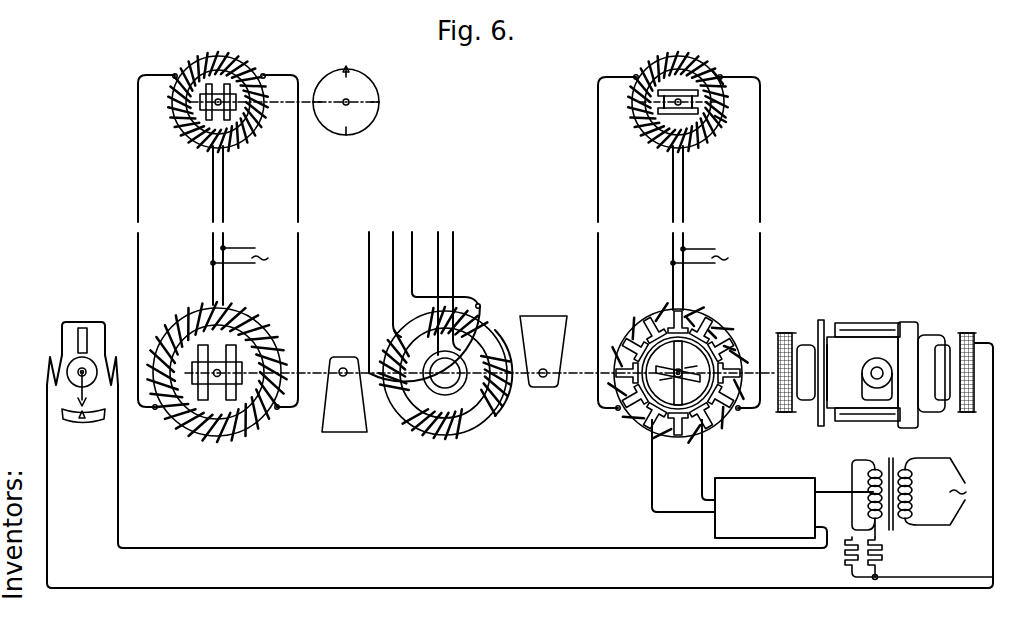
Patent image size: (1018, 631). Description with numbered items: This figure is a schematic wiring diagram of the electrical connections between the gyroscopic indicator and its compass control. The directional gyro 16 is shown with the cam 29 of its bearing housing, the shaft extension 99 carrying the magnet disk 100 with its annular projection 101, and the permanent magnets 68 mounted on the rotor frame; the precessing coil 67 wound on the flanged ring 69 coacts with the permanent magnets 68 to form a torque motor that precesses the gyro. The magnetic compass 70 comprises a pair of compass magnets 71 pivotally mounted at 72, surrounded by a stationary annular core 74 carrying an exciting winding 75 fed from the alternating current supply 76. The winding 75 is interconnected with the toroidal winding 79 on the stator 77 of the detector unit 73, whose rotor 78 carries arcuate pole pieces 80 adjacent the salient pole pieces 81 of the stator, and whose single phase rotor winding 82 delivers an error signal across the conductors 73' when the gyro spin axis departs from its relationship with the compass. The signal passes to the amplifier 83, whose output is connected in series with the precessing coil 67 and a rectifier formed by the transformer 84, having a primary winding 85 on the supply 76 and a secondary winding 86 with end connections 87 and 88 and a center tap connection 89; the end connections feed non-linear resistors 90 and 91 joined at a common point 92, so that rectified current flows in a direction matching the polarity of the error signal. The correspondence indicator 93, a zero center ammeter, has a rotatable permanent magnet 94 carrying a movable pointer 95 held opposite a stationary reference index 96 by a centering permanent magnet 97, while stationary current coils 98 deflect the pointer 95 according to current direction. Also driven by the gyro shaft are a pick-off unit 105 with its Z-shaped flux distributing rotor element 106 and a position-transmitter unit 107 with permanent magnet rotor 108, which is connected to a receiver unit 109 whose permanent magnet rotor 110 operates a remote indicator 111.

The directional gyro 16 is at (853, 377).
The cam 29 is at (862, 390).
The precessing coil 67 is at (975, 372).
The permanent magnets 68 is at (886, 324).
The flanged ring 69 is at (786, 331).
The magnetic compass 70 is at (684, 47).
The compass magnets 71 is at (664, 102).
The pivot 72 is at (686, 102).
The detector unit 73 is at (678, 374).
The conductors 73' is at (677, 450).
The stationary annular core 74 is at (720, 80).
The exciting winding 75 is at (724, 125).
The alternating current supply 76 is at (238, 256).
The stator 77 is at (713, 336).
The rotor 78 is at (676, 394).
The toroidal winding 79 is at (692, 320).
The arcuate pole pieces 80 is at (688, 372).
The salient pole pieces 81 is at (732, 350).
The single phase rotor winding 82 is at (668, 370).
The amplifier 83 is at (783, 478).
The transformer 84 is at (899, 455).
The primary winding 85 is at (913, 480).
The secondary winding 86 is at (869, 476).
The end connection 87 is at (872, 464).
The end connection 88 is at (870, 518).
The center tap connection 89 is at (869, 498).
The non-linear resistor 90 is at (847, 565).
The non-linear resistor 91 is at (883, 549).
The common point 92 is at (880, 575).
The correspondence indicator 93 is at (92, 311).
The permanent magnet 94 is at (92, 378).
The movable pointer 95 is at (79, 385).
The stationary reference index 96 is at (82, 420).
The centering permanent magnet 97 is at (88, 338).
The current coils 98 is at (50, 362).
The shaft extension 99 is at (829, 370).
The magnet disk 100 is at (821, 320).
The annular projection 101 is at (810, 354).
The pick-off unit 105 is at (488, 424).
The Z-shaped flux distributing rotor element 106 is at (558, 362).
The position-transmitter unit 107 is at (236, 430).
The permanent magnet rotor 108 is at (216, 360).
The receiver unit 109 is at (233, 62).
The permanent magnet rotor 110 is at (217, 106).
The remote indicator 111 is at (370, 87).